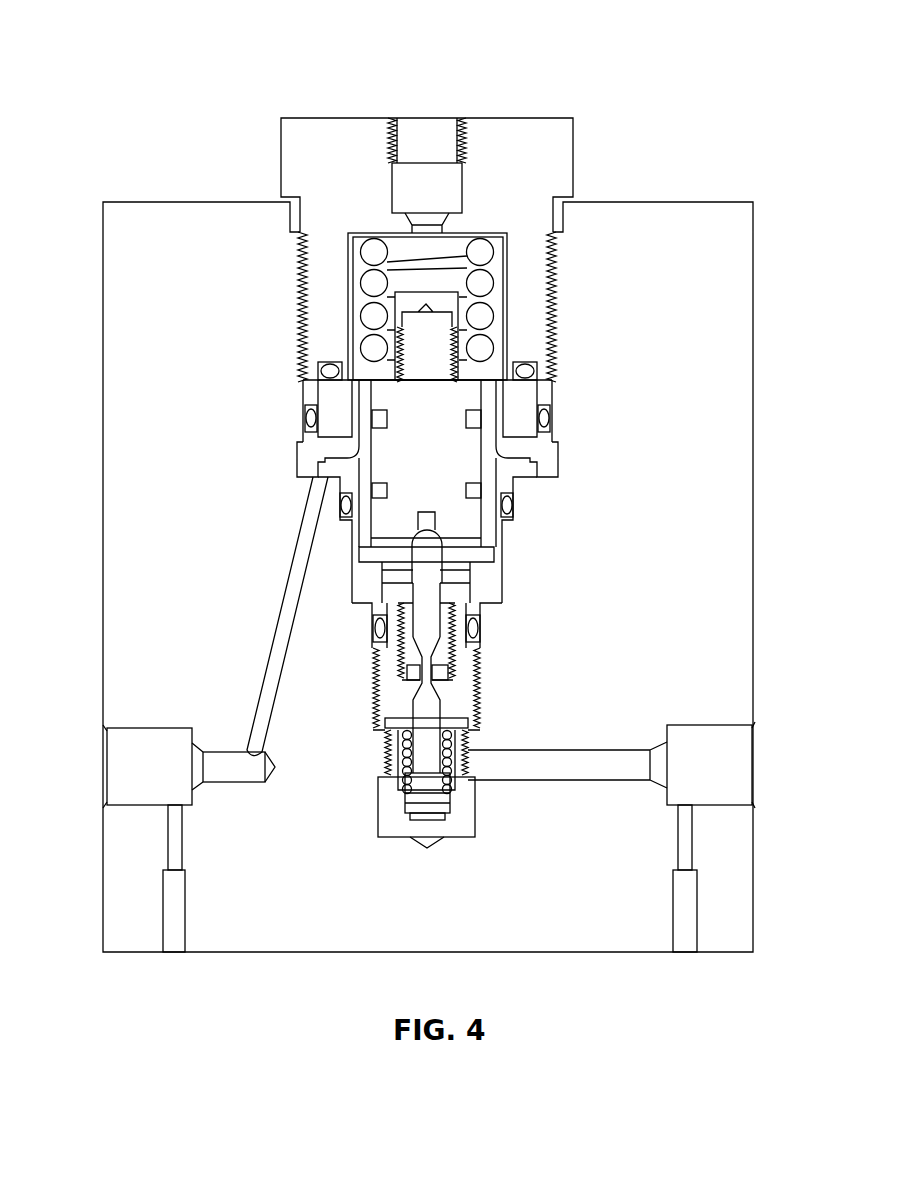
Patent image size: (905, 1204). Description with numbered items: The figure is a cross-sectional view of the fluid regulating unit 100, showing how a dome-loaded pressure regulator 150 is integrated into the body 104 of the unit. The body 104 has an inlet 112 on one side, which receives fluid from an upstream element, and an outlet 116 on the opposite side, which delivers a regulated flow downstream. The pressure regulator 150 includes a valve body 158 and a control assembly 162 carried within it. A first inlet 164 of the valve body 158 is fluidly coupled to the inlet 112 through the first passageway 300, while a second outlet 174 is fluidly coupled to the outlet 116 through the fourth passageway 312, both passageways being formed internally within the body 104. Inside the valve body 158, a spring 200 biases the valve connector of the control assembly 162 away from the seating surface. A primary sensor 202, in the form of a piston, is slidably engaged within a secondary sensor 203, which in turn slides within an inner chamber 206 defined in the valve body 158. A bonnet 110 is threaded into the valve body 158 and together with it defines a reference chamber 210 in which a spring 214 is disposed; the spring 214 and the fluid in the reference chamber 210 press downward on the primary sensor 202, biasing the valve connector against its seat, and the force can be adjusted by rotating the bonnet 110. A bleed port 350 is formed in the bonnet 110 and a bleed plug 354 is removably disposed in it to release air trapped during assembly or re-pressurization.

The fluid regulating unit 100 is at (160, 62).
The body 104 is at (152, 208).
The bonnet 110 is at (322, 117).
The inlet 112 is at (757, 757).
The outlet 116 is at (100, 775).
The pressure regulator 150 is at (530, 548).
The valve body 158 is at (533, 478).
The control assembly 162 is at (423, 603).
The first inlet 164 is at (470, 762).
The second outlet 174 is at (310, 478).
The spring 200 is at (450, 775).
The primary sensor 202 is at (462, 452).
The secondary sensor 203 is at (362, 402).
The inner cavity or chamber 206 is at (500, 412).
The reference chamber 210 is at (357, 262).
The spring 214 is at (372, 285).
The first passageway 300 is at (560, 750).
The fourth passageway 312 is at (280, 637).
The bleed port 350 is at (462, 178).
The bleed plug 354 is at (437, 148).